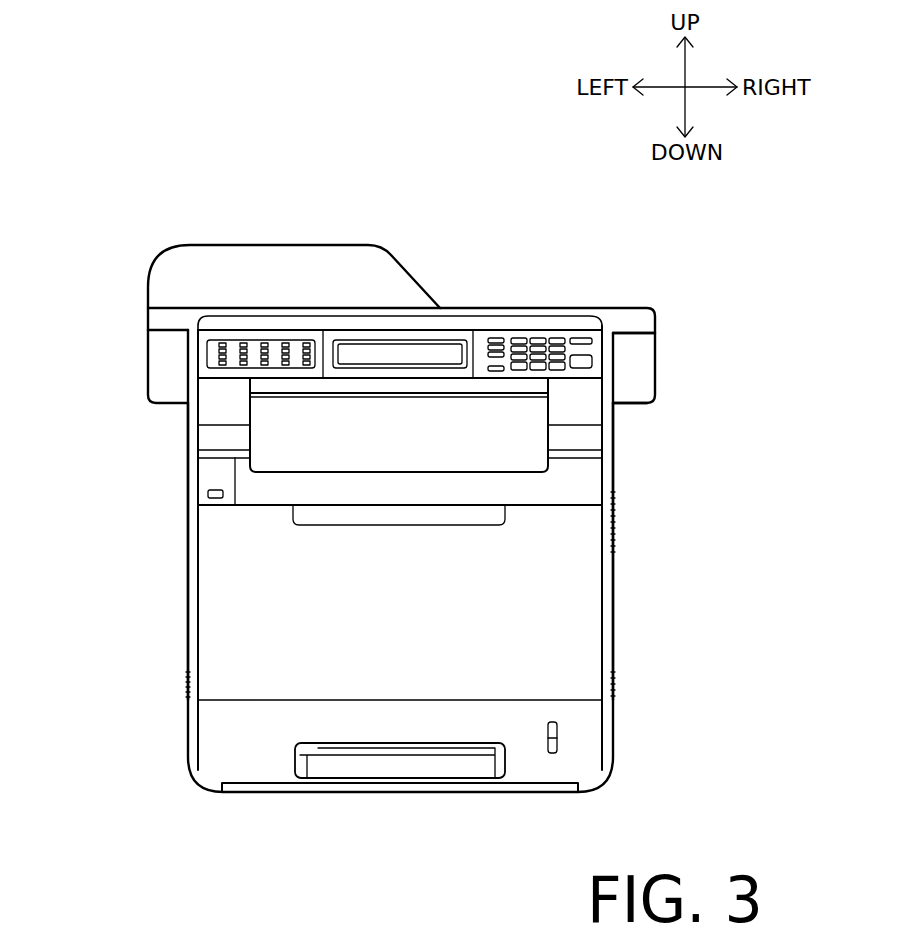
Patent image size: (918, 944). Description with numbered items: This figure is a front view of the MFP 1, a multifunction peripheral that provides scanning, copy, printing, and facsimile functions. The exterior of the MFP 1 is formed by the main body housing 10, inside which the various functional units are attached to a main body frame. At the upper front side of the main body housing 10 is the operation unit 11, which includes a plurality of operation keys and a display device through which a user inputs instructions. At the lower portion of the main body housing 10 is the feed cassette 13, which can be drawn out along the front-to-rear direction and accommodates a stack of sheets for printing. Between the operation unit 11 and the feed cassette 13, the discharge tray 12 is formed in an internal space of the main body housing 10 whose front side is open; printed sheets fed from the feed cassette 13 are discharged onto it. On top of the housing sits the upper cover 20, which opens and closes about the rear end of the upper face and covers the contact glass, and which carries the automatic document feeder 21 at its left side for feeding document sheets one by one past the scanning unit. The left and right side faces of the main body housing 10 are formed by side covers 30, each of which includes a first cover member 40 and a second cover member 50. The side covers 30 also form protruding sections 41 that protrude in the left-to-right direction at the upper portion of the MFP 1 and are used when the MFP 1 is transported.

The MFP 1 is at (138, 125).
The main body housing 10 is at (590, 608).
The operation unit 11 is at (500, 334).
The discharge tray 12 is at (486, 458).
The feed cassette 13 is at (590, 743).
The upper cover 20 is at (622, 318).
The automatic document feeder 21 is at (254, 262).
The side cover 30 is at (72, 370).
The first cover member 40 is at (190, 468).
The protruding section 41 is at (142, 344).
The second cover member 50 is at (160, 380).